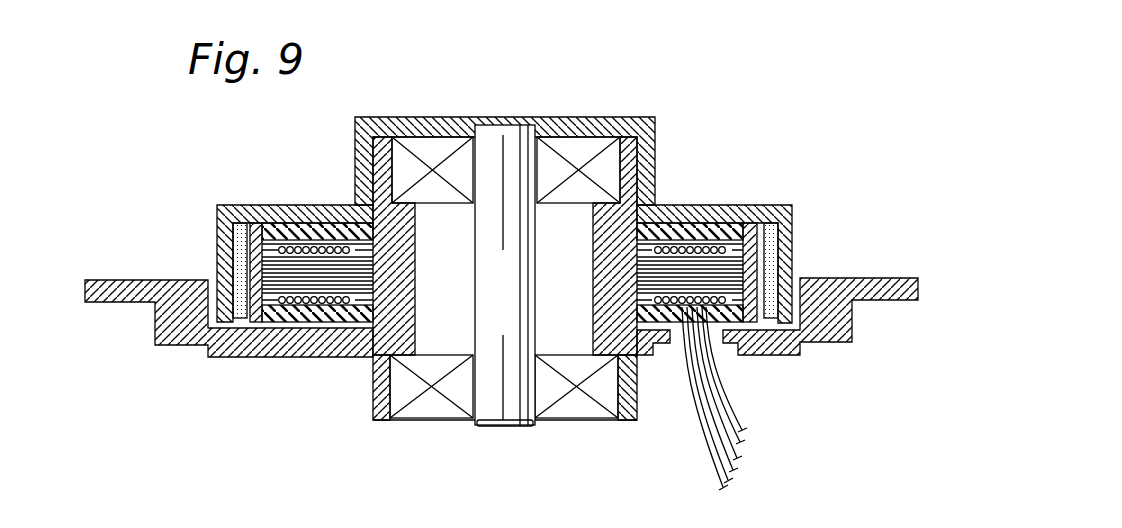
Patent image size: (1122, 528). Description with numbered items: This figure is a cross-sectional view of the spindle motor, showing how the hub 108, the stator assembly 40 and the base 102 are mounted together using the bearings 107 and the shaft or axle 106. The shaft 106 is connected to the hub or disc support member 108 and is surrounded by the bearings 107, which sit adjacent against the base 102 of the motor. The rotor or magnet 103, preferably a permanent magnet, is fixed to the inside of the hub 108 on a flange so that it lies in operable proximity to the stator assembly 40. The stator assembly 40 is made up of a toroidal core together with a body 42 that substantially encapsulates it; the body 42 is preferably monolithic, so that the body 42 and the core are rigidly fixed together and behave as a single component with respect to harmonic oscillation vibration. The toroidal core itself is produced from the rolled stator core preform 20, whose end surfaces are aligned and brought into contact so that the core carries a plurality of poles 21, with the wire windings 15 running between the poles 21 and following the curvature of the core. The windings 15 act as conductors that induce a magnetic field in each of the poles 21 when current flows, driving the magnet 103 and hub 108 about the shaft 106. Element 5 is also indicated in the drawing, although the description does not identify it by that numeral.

The seal member 5 is at (220, 247).
The wire windings 15 is at (290, 240).
The stator core preform 20 is at (738, 236).
The poles 21 is at (342, 237).
The stator assembly 40 is at (753, 228).
The body 42 is at (670, 233).
The base 102 is at (877, 278).
The magnet 103 is at (238, 240).
The shaft 106 is at (500, 403).
The bearings 107 is at (600, 147).
The hub 108 is at (593, 125).